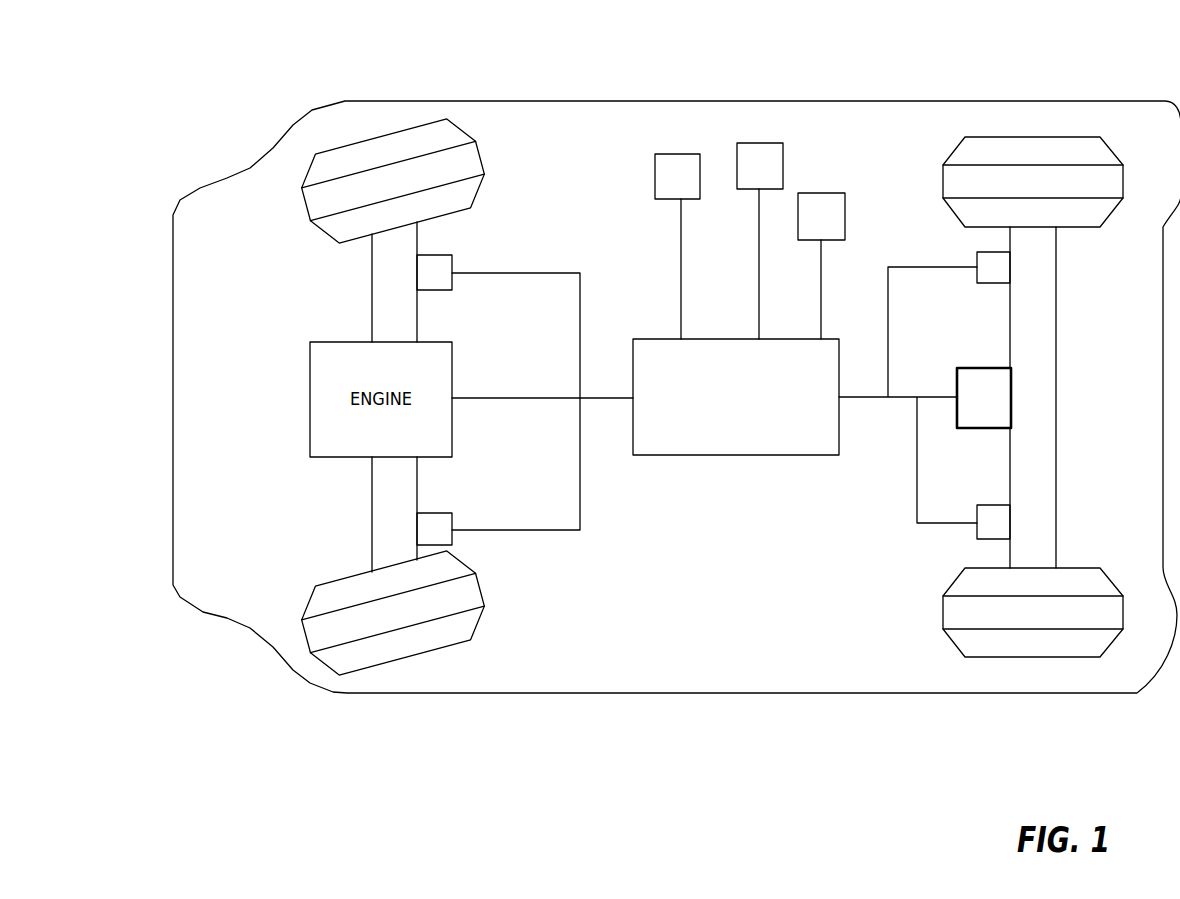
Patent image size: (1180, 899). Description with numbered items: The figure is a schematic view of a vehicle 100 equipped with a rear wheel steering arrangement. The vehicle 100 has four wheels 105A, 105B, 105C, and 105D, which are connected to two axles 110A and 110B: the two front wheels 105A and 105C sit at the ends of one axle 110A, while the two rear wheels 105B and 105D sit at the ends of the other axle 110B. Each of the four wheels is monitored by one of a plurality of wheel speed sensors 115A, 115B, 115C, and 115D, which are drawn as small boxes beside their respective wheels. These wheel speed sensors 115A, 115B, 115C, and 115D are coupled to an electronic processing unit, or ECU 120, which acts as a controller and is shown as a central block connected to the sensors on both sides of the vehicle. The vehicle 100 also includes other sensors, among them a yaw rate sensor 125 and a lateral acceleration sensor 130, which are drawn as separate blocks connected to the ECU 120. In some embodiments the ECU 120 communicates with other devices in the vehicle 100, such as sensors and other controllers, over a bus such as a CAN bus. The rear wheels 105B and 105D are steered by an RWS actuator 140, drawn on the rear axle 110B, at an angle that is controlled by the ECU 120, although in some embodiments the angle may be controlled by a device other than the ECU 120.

The vehicle 100 is at (747, 90).
The wheel 105A is at (482, 158).
The wheel 105B is at (1048, 137).
The wheel 105C is at (387, 660).
The wheel 105D is at (1042, 658).
The axle 110A is at (370, 542).
The axle 110B is at (1062, 385).
The wheel speed sensor 115A is at (435, 255).
The wheel speed sensor 115B is at (992, 250).
The wheel speed sensor 115C is at (455, 547).
The wheel speed sensor 115D is at (988, 539).
The electronic processing unit (ECU) 120 is at (668, 338).
The yaw rate sensor 125 is at (765, 141).
The lateral acceleration sensor 130 is at (825, 193).
The RWS actuator 140 is at (977, 368).